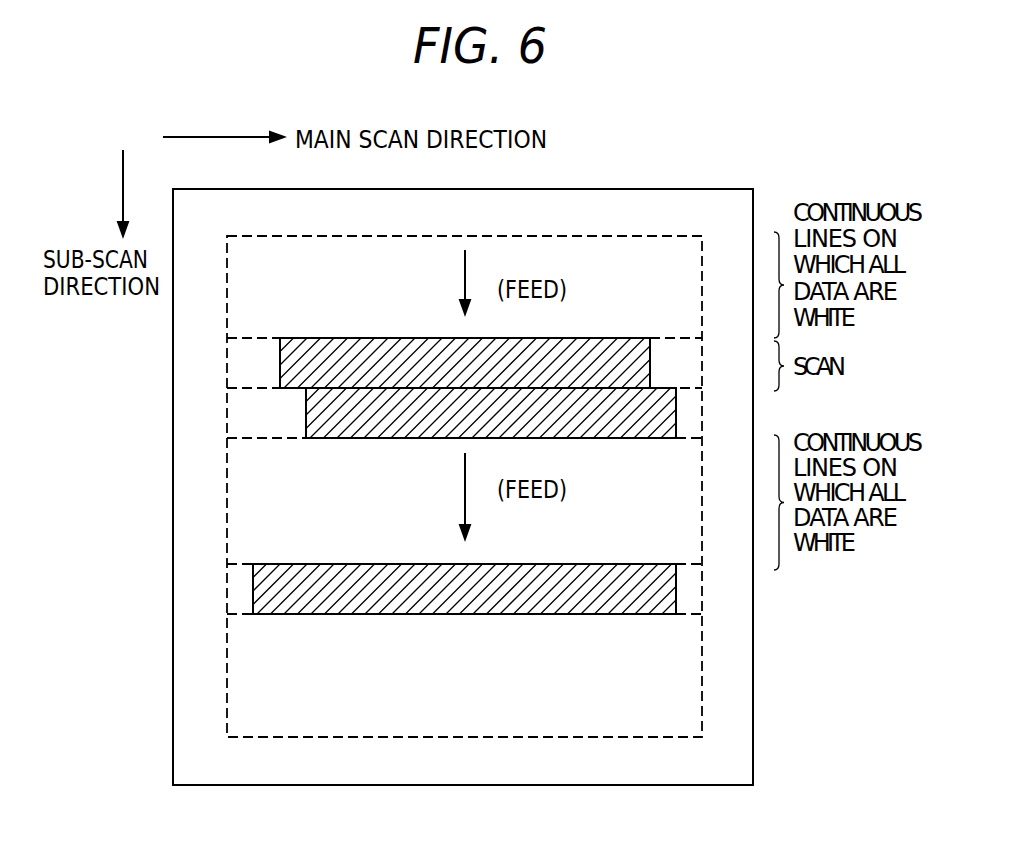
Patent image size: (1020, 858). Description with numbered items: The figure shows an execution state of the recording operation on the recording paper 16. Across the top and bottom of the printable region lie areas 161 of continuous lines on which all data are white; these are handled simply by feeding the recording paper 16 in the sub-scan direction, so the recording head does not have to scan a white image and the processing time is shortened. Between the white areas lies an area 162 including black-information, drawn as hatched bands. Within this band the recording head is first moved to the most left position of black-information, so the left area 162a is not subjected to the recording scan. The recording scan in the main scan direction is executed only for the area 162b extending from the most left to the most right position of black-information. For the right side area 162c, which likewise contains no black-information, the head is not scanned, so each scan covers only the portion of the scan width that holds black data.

The recording paper 16 is at (753, 755).
The area of continuous white lines 161 is at (693, 273).
The area including black-information 162 is at (392, 444).
The area not subjected to the recording scan 162a is at (237, 362).
The area from the most left to the most right position of black-information 162b is at (357, 355).
The right side area including no black-information 162c is at (663, 347).